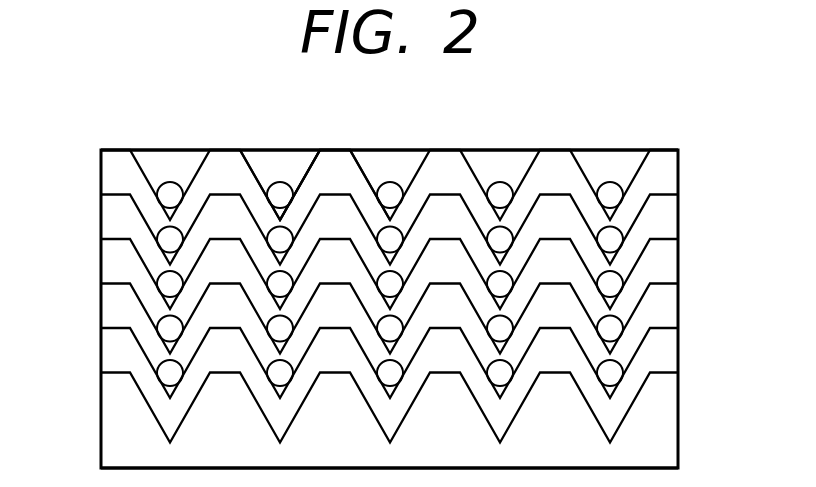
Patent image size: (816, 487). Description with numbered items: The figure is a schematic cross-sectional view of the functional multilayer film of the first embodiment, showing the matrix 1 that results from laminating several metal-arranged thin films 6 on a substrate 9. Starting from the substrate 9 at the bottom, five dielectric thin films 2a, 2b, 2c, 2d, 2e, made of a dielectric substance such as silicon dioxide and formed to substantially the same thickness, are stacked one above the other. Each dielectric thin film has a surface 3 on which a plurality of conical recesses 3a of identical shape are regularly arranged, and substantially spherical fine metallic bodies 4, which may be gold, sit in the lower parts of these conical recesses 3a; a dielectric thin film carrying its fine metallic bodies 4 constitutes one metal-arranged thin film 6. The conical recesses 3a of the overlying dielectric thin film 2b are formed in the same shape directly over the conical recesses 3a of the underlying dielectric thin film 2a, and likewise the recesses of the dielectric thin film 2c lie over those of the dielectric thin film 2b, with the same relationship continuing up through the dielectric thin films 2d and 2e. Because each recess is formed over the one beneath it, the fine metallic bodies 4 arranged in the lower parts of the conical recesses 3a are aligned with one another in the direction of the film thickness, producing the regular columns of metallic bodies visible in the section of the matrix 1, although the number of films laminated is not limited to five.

The matrix 1 is at (105, 256).
The dielectric thin film 2a is at (678, 351).
The dielectric thin film 2b is at (678, 306).
The dielectric thin film 2c is at (678, 262).
The dielectric thin film 2d is at (678, 217).
The dielectric thin film 2e is at (678, 172).
The surface 3 is at (344, 150).
The conical recesses 3a is at (257, 178).
The fine metallic bodies 4 is at (500, 182).
The metal-arranged thin film 6 is at (101, 171).
The substrate 9 is at (678, 416).